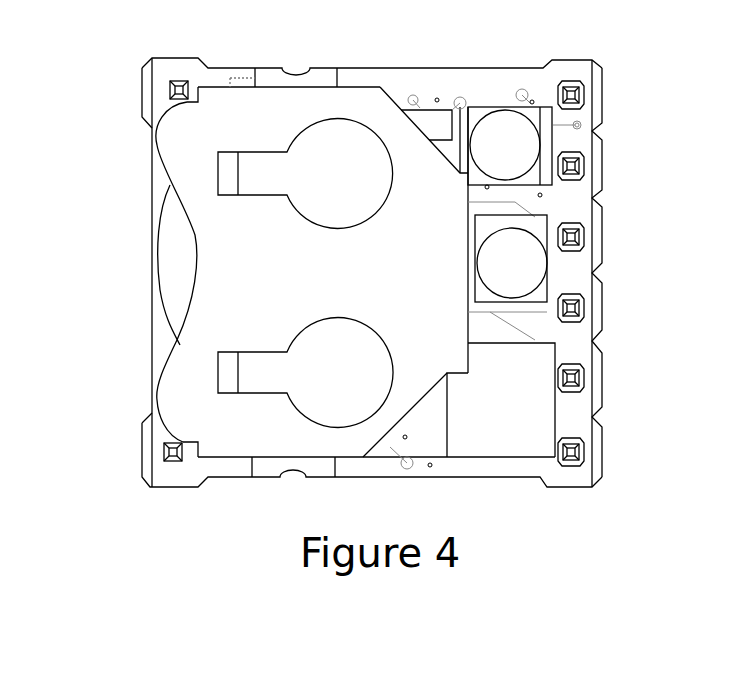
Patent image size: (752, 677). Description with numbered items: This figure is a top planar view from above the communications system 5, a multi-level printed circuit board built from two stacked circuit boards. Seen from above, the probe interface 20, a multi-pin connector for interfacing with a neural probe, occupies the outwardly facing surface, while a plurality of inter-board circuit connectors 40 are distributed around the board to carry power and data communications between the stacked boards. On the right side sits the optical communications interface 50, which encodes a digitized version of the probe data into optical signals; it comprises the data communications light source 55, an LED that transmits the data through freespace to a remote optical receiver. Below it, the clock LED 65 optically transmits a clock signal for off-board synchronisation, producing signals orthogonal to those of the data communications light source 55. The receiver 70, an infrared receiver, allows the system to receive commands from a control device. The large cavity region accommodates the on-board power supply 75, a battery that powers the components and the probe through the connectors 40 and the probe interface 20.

The communications system 5 is at (103, 37).
The probe interface 20 is at (450, 83).
The inter-board circuit connectors 40 is at (170, 88).
The optical communications interface 50 is at (512, 133).
The data communications light source 55 is at (522, 122).
The clock LED 65 is at (532, 265).
The receiver 70 is at (525, 422).
The on-board power supply 75 is at (228, 242).